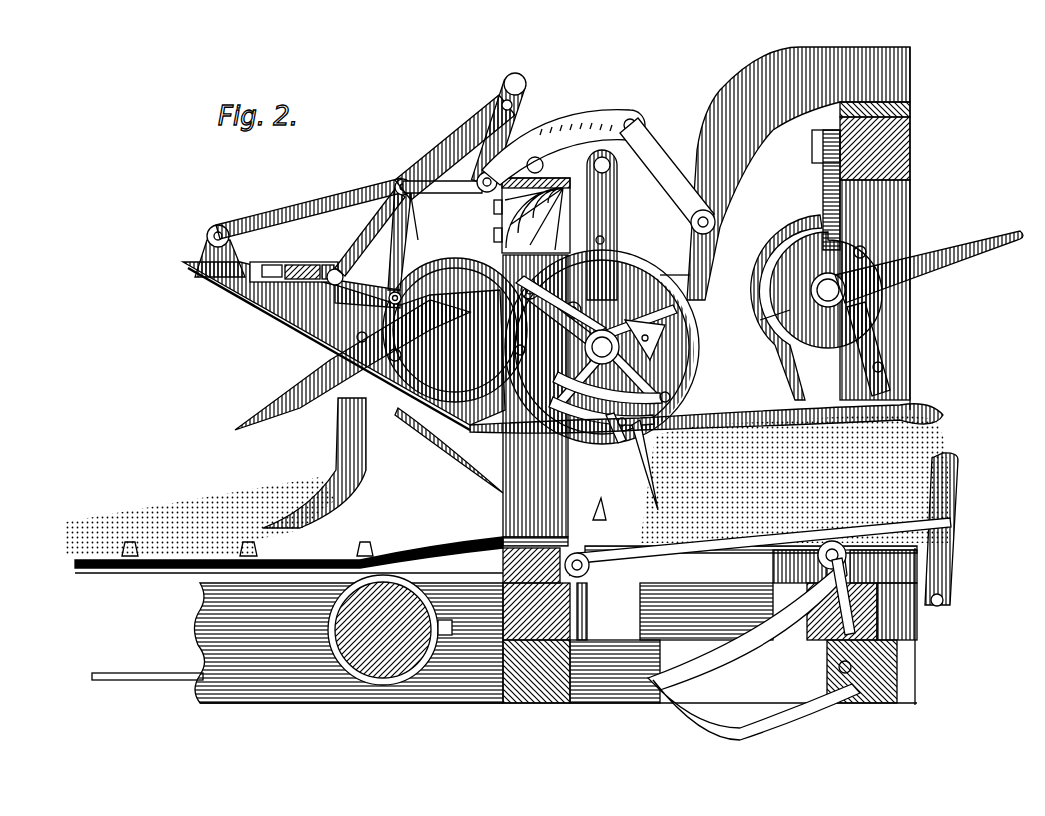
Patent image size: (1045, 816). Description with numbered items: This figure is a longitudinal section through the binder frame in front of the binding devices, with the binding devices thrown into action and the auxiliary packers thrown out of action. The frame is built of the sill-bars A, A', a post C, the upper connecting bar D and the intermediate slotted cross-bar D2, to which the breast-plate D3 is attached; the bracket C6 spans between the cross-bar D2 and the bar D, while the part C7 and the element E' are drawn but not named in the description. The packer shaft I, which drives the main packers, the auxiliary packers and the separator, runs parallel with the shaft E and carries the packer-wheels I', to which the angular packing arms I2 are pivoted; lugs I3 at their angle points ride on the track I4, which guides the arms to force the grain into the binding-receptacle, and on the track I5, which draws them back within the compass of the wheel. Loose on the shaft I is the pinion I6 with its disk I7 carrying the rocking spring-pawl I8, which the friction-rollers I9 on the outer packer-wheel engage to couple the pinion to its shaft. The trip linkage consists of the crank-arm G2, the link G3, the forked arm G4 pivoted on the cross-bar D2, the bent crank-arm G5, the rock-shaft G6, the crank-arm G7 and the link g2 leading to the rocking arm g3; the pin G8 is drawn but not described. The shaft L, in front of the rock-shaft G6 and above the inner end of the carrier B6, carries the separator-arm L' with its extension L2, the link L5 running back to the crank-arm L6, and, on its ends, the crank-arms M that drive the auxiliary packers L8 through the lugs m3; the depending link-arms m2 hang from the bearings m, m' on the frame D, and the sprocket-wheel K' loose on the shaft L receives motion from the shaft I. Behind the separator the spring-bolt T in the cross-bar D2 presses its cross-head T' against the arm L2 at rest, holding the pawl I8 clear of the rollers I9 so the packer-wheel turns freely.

The post C is at (568, 498).
The intermediate slotted cross-bar D2 is at (801, 376).
The friction-rollers I9 is at (775, 362).
The rocking spring-pawl I8 is at (760, 320).
The packer-wheels I' is at (614, 315).
The upper connecting bar D is at (539, 215).
The bracket C6 is at (610, 166).
The post pin C7 is at (594, 239).
The breast-plate D3 is at (452, 370).
The shaft L is at (344, 346).
The auxiliary packers L8 is at (268, 388).
The separator-arm L' is at (314, 463).
The crank-arm M is at (395, 362).
The sliding spring-bolt T is at (294, 265).
The sprocket-wheel K' is at (368, 282).
The lug m3 is at (334, 268).
The cross-head T' is at (370, 232).
The rocking arm g3 is at (220, 226).
The link g2 is at (310, 200).
The extension arm of separator-arm L2 is at (405, 230).
The depending link-arms m2 is at (416, 218).
The link m' is at (450, 211).
The bearings m is at (442, 195).
The link L5 is at (450, 140).
The crank-arm L6 is at (520, 130).
The crank-arm G7 is at (500, 107).
The rock-shaft G6 is at (485, 192).
The bent crank-arm G5 is at (590, 120).
The pin G8 is at (636, 122).
The link G3 is at (688, 182).
The crank-arm G2 is at (545, 162).
The bifurcated or forked arm G4 is at (689, 267).
The shaft I is at (602, 361).
The track I5 is at (514, 350).
The disk or plate I7 is at (645, 343).
The cam or track way I4 is at (611, 388).
The pinion I6 is at (601, 411).
The lugs I3 is at (609, 428).
The packing arms or fingers I2 is at (625, 470).
The sill-bar A is at (496, 542).
The carrier or apron B6 is at (247, 545).
The sill-bar A' is at (504, 639).
The shaft E is at (708, 596).
The lever arm E' is at (758, 542).